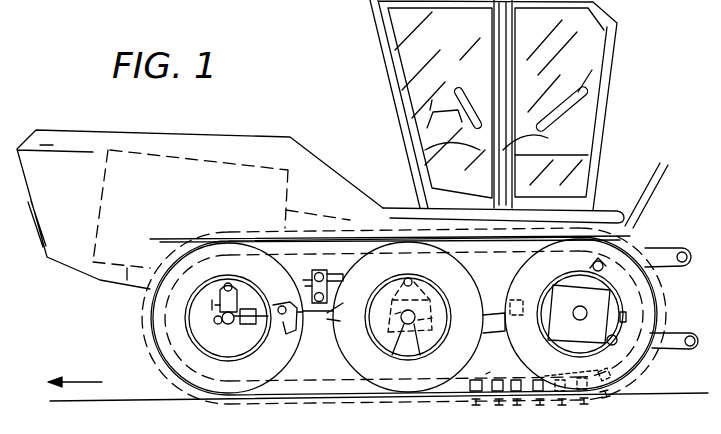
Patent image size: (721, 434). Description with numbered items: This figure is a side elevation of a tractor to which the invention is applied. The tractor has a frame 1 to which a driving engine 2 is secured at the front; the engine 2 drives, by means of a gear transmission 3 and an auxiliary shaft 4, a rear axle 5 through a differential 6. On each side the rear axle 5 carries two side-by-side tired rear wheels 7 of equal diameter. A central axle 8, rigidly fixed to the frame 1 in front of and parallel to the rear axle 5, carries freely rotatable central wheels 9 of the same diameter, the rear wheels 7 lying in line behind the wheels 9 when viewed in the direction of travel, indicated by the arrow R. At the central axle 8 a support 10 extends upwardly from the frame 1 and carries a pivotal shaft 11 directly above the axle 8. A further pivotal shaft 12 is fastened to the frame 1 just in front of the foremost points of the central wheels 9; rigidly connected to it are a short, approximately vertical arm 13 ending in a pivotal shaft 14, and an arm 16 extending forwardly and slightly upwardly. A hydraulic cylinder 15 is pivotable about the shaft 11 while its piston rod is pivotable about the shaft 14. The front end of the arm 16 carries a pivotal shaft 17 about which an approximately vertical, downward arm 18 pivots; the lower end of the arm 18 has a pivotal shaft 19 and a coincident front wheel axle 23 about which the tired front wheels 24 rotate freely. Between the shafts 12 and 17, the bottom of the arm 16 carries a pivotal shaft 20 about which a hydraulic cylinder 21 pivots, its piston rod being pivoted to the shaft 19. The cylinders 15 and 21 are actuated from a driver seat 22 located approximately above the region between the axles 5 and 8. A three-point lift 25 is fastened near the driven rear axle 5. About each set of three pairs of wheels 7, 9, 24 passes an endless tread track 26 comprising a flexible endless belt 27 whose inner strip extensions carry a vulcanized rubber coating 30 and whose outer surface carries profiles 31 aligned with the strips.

The frame 1 is at (482, 368).
The driving engine 2 is at (112, 188).
The gear transmission 3 is at (323, 214).
The auxiliary shaft 4 is at (505, 306).
The rear axle 5 is at (582, 321).
The differential 6 is at (545, 290).
The rear wheels 7 is at (520, 355).
The central axle 8 is at (397, 356).
The central wheels 9 is at (352, 360).
The support 10 is at (420, 356).
The pivotal shaft 11 is at (418, 282).
The pivotal shaft 12 is at (332, 298).
The short arm 13 is at (333, 322).
The pivotal shaft 14 is at (320, 272).
The hydraulic cylinder 15 is at (345, 276).
The arm 16 is at (308, 283).
The pivotal shaft 17 is at (238, 283).
The arm 18 is at (216, 307).
The pivotal shaft 19 is at (218, 323).
The pivotal shaft 20 is at (300, 328).
The hydraulic cylinder 21 is at (283, 318).
The driver seat 22 is at (557, 130).
The front wheel axle 23 is at (233, 325).
The front wheels 24 is at (282, 377).
The three-point lift 25 is at (684, 332).
The endless tread track 26 is at (475, 399).
The endless belt 27 is at (371, 398).
The rubber coating 30 is at (575, 372).
The profiles 31 is at (578, 408).
The direction of travel R is at (76, 371).